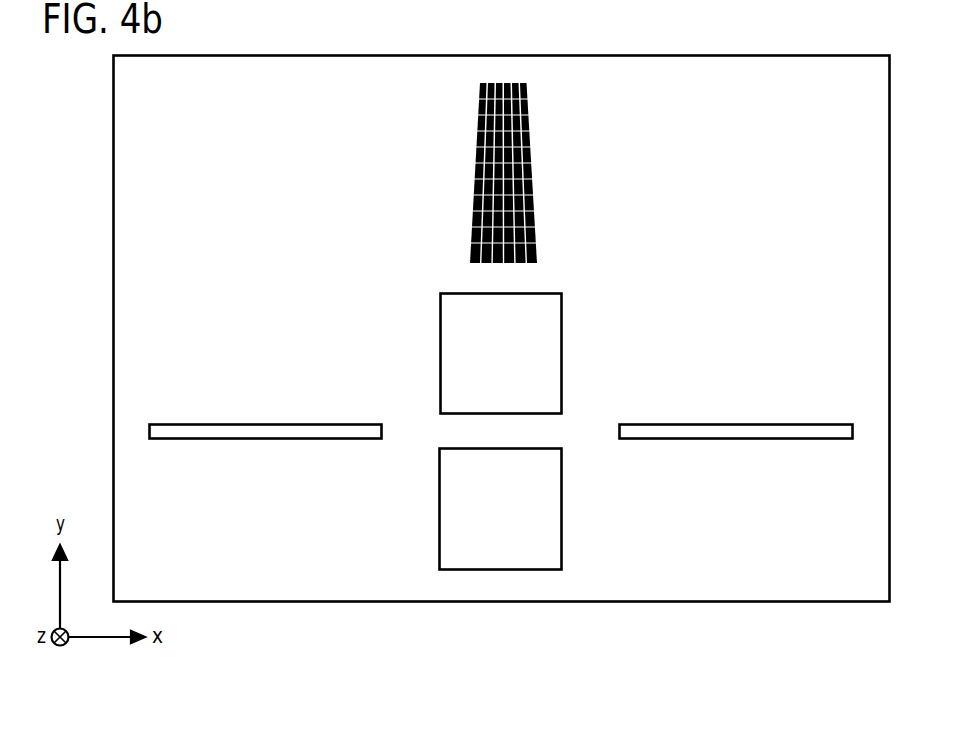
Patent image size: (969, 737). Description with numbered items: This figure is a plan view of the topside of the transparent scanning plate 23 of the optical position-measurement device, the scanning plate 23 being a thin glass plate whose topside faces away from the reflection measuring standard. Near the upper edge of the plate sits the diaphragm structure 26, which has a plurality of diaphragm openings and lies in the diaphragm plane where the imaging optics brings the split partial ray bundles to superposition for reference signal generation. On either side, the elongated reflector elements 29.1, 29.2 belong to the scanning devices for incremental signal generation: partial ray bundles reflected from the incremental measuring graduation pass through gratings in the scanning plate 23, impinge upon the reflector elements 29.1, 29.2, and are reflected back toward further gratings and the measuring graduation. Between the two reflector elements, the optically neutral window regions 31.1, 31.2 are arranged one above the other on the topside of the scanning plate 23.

The scanning plate 23 is at (802, 74).
The diaphragm structure 26 is at (527, 130).
The reflector element 29.1 is at (240, 432).
The reflector element 29.2 is at (733, 432).
The optically neutral window region 31.1 is at (455, 351).
The optically neutral window region 31.2 is at (456, 511).